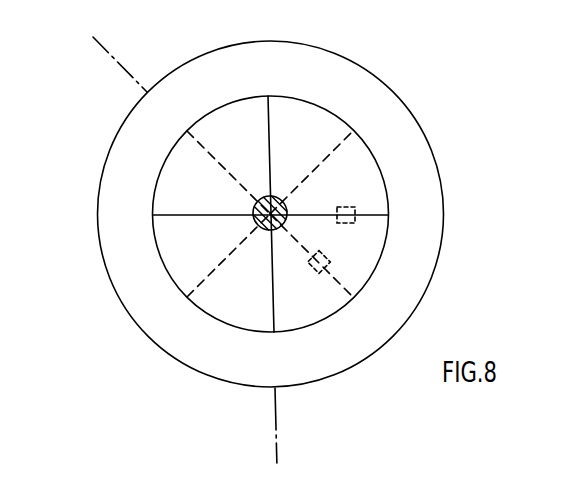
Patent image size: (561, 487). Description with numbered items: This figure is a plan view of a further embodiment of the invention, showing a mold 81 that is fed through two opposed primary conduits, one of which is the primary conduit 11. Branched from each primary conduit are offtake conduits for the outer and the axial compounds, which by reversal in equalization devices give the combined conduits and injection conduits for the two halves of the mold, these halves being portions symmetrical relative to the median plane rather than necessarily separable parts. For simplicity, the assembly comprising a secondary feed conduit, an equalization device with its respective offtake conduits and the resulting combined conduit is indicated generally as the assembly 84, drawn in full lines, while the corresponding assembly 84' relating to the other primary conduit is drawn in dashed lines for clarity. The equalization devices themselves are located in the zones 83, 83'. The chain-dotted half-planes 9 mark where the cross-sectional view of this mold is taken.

The mold 81 is at (444, 228).
The assembly 84 is at (303, 170).
The assembly 84' is at (161, 264).
The primary conduit 11 is at (284, 198).
The zone 83 is at (409, 178).
The zone 83' is at (396, 272).
The half-plane 9 is at (318, 192).